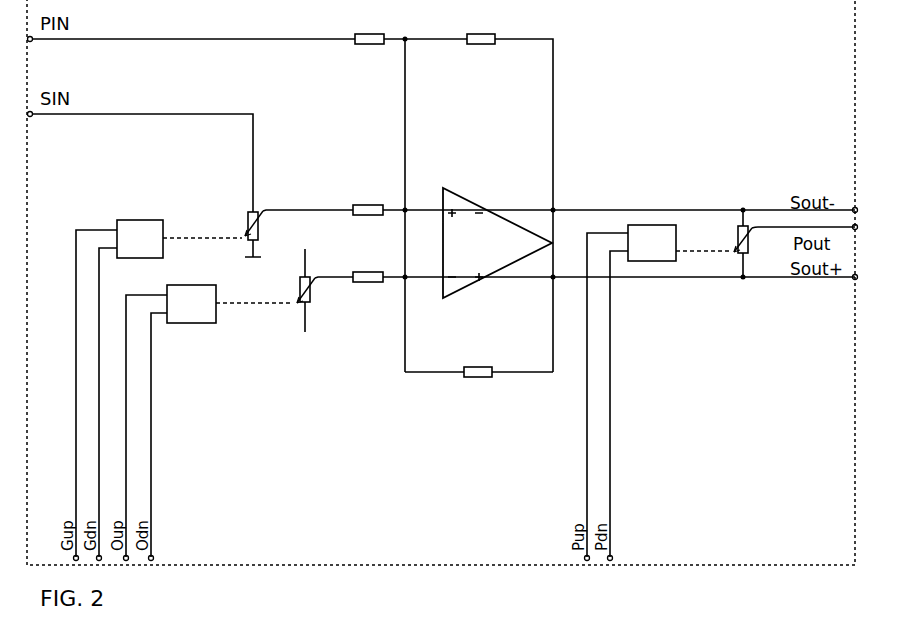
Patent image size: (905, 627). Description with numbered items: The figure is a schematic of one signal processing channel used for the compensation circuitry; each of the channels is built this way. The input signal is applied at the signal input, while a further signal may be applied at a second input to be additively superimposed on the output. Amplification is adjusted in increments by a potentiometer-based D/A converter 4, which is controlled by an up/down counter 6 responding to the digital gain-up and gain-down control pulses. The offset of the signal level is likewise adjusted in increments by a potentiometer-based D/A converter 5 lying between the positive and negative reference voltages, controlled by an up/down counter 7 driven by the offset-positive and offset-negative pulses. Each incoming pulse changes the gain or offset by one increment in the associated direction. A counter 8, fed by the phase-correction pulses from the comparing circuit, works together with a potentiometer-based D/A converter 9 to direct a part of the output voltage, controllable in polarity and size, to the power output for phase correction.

The potentiometer-based D/A converter 4 is at (241, 212).
The potentiometer-based D/A converter 5 is at (297, 312).
The up/down counter 6 is at (140, 222).
The up/down counter 7 is at (207, 314).
The counter 8 is at (656, 233).
The potentiometer-based D/A converter 9 is at (735, 258).